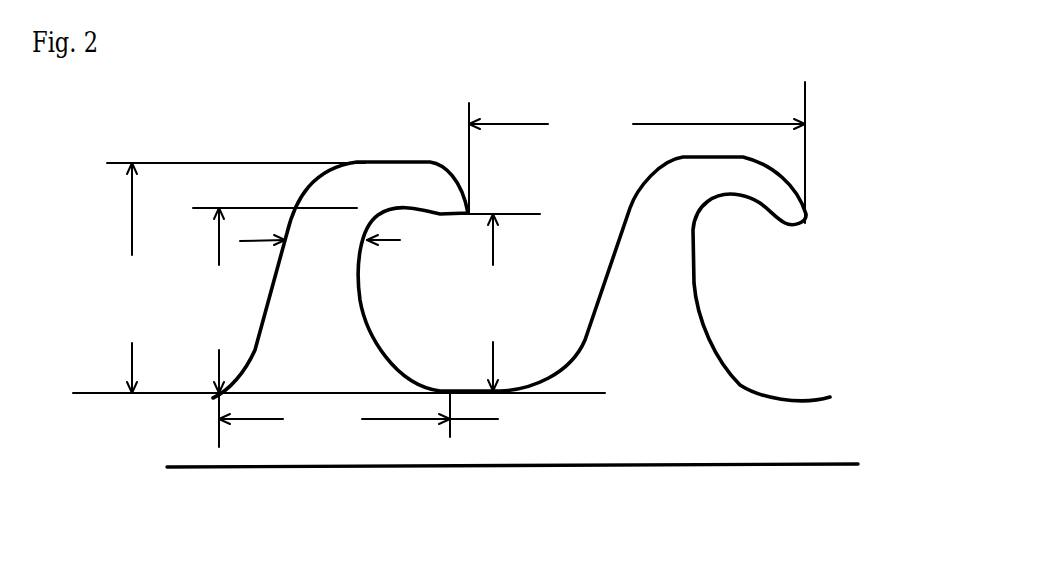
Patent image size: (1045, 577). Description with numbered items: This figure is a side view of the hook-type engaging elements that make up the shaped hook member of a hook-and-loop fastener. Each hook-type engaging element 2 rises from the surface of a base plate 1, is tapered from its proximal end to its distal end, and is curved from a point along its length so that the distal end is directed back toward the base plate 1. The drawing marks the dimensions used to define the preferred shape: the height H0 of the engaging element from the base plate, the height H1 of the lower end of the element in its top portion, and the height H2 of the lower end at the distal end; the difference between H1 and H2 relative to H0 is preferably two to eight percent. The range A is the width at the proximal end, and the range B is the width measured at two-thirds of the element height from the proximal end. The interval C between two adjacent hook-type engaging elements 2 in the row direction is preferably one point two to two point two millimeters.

The base plate 1 is at (630, 538).
The hook-type engaging element 2 is at (677, 292).
The height of hook-type engaging element H0 is at (141, 278).
The height of lower end of hook-type engaging element in top portion H1 is at (221, 327).
The height of lower end of hook-type engaging element at distal end H2 is at (498, 302).
The range at engaging element proximal end A is at (358, 415).
The range at a height of two-thirds the height of engaging element B is at (320, 252).
The interval between hook-type engaging elements adjacent in row direction C is at (637, 152).